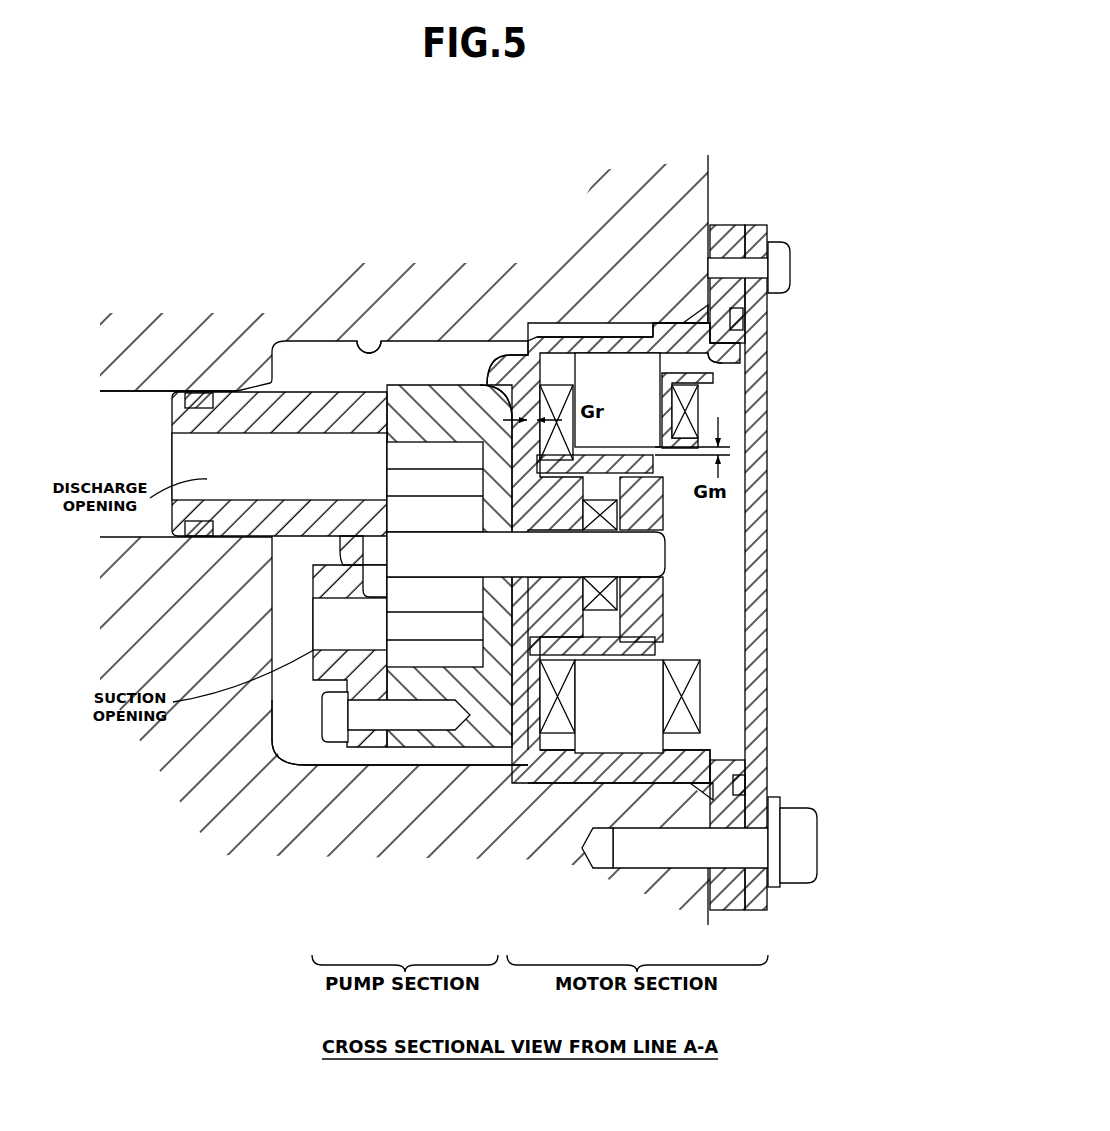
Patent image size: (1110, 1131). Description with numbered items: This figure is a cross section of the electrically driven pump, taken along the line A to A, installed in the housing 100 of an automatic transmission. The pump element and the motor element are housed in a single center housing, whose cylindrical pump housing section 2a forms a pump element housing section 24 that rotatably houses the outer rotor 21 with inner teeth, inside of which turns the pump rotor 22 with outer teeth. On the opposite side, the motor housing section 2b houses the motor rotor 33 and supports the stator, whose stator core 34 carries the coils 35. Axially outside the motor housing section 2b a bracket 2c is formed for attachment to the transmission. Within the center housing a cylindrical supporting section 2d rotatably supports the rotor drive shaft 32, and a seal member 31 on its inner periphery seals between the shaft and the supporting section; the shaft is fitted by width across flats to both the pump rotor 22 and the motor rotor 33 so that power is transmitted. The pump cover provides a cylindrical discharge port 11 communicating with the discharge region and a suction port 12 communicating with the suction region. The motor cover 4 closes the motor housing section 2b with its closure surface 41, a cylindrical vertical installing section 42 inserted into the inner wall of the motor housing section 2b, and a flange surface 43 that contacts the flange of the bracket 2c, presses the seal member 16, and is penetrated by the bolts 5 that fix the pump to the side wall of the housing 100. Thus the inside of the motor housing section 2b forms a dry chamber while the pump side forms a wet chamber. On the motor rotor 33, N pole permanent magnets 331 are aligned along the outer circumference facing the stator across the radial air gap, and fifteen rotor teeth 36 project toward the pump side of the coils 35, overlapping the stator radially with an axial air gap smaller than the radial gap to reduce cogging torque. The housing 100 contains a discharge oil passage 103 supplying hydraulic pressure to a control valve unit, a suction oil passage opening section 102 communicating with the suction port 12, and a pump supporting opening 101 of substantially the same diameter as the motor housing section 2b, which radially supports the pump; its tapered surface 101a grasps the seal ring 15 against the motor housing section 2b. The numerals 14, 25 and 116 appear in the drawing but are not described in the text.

The cylindrical pump housing section 2a is at (452, 383).
The motor housing section 2b is at (590, 333).
The bracket 2c is at (707, 300).
The cylindrical supporting section 2d is at (535, 722).
The motor cover 4 is at (768, 345).
The bolt 5 is at (797, 885).
The discharge port 11 is at (288, 338).
The suction port 12 is at (310, 676).
The pump housing bottom 14 is at (333, 745).
The seal ring 15 is at (718, 767).
The seal member 16 is at (740, 318).
The outer rotor 21 is at (417, 452).
The pump rotor 22 is at (408, 497).
The pump element housing section 24 is at (423, 657).
The fixing bolt 25 is at (745, 835).
The seal member 31 is at (620, 517).
The rotor drive shaft 32 is at (652, 565).
The motor rotor 33 is at (668, 608).
The stator core 34 is at (590, 740).
The coil 35 is at (533, 660).
The rotor teeth 36 is at (487, 372).
The closure surface 41 is at (748, 518).
The cylindrical vertical installing section 42 is at (735, 363).
The flange surface 43 is at (757, 870).
The housing 100 is at (710, 185).
The pump supporting opening 101 is at (543, 320).
The tapered surface 101a is at (705, 362).
The suction oil passage opening section 102 is at (362, 338).
The discharge oil passage 103 is at (122, 393).
The seal 116 is at (197, 537).
The N pole permanent magnet 331 is at (607, 650).